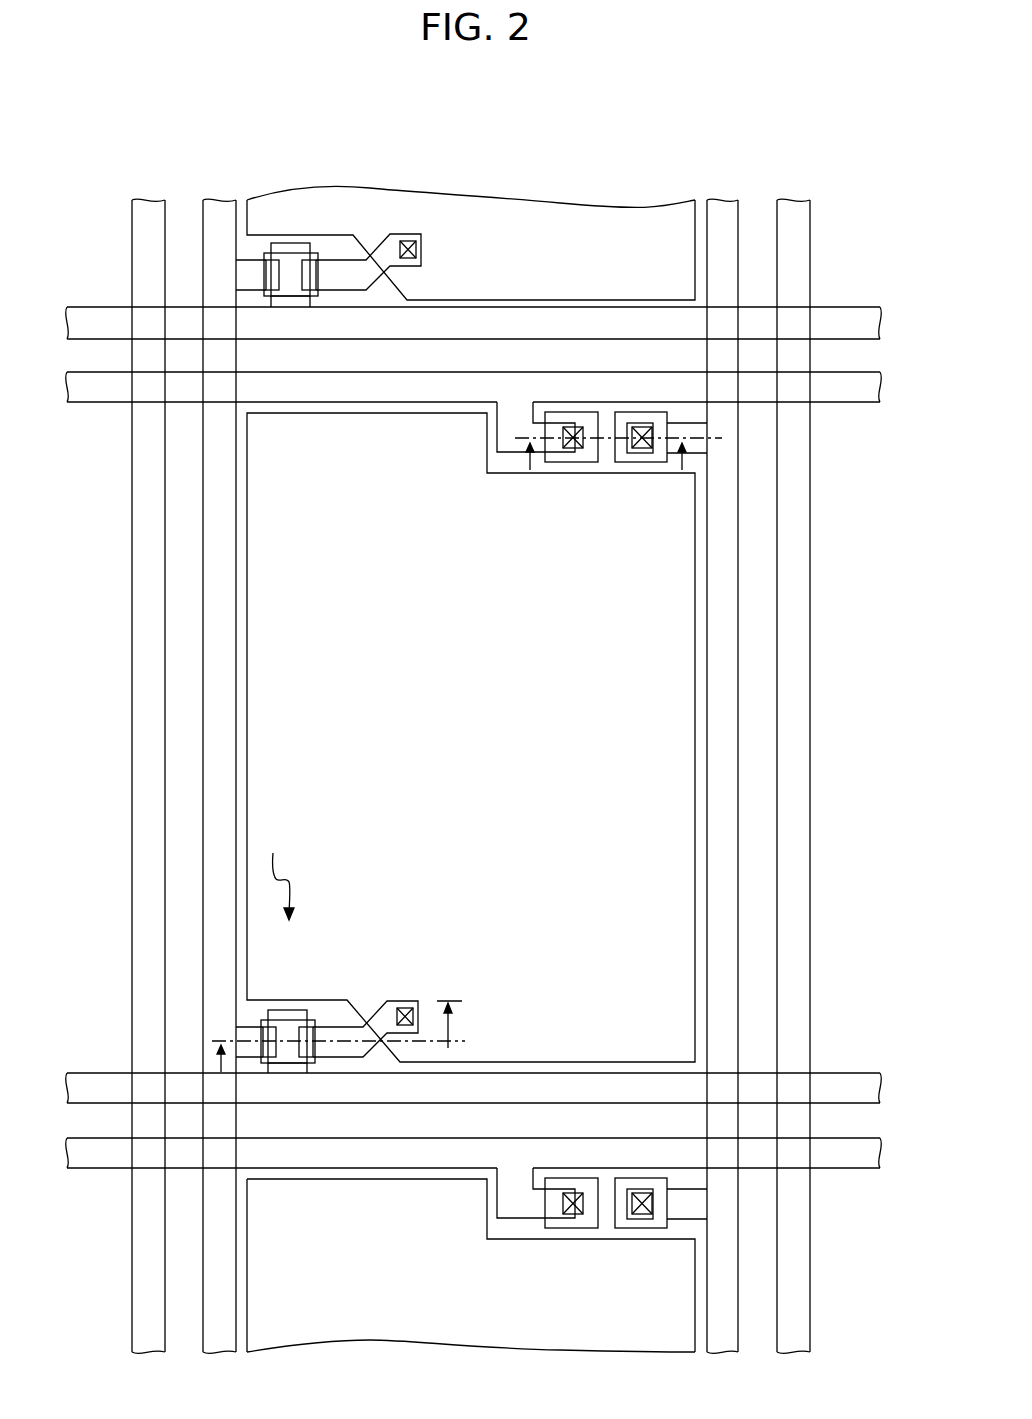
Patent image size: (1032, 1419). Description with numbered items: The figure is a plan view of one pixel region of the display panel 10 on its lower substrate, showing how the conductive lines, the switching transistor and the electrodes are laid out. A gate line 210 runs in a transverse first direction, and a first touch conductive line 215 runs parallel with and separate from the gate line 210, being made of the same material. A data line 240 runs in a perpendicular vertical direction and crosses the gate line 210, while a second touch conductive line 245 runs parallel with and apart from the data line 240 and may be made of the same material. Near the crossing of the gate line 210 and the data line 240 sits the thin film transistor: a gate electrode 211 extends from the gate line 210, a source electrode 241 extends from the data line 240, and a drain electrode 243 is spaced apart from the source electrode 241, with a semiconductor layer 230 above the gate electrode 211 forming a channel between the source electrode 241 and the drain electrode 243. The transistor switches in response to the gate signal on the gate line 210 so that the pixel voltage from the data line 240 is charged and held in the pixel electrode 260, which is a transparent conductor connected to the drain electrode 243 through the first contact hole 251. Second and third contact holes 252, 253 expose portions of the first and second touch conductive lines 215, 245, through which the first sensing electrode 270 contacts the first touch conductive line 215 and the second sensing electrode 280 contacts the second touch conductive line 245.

The thin film transistor array substrate 10 is at (673, 130).
The gate line 210 is at (93, 1086).
The gate electrode 211 is at (289, 1012).
The first touch conductive line 215 is at (100, 390).
The semiconductor layer 230 is at (309, 1006).
The data line 240 is at (220, 562).
The source electrode 241 is at (254, 1030).
The drain electrode 243 is at (376, 1012).
The second touch conductive line 245 is at (725, 770).
The first contact hole 251 is at (411, 1001).
The second contact hole 252 is at (577, 473).
The third contact hole 253 is at (640, 473).
The pixel electrode 260 is at (663, 848).
The first sensing electrode 270 is at (552, 473).
The second sensing electrode 280 is at (652, 473).